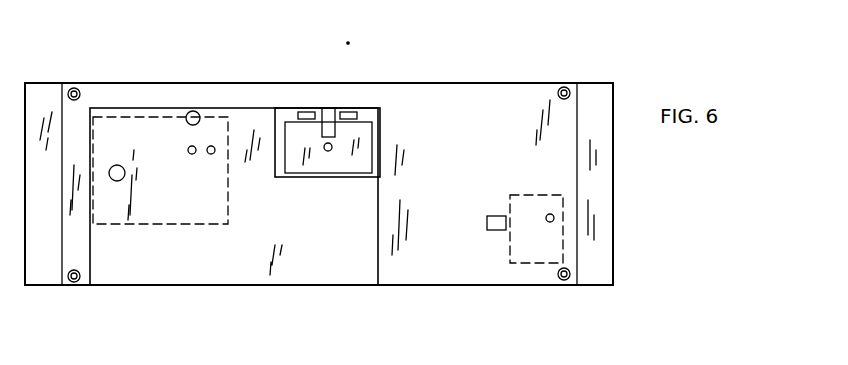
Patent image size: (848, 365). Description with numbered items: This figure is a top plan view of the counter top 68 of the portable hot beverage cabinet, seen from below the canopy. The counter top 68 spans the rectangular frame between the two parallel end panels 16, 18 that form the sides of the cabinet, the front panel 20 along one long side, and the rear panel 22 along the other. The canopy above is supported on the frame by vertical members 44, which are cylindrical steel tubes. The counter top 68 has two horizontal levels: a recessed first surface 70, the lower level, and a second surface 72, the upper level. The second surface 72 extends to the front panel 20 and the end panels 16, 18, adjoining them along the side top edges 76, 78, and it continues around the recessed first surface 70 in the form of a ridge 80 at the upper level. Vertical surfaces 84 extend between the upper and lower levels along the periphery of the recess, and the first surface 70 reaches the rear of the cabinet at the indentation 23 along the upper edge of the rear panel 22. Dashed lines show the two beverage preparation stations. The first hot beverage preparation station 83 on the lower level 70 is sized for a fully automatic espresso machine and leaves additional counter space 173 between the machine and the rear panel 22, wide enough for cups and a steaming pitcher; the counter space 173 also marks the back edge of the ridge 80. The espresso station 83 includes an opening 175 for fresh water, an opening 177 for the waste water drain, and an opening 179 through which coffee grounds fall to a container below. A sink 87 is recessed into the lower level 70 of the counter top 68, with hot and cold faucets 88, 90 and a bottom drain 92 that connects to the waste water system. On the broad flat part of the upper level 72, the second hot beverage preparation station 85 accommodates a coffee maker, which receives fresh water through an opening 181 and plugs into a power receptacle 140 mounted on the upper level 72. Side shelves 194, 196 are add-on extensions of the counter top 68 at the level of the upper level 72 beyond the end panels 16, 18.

The end panel 16 is at (62, 110).
The end panel 18 is at (577, 105).
The front panel 20 is at (348, 83).
The rear panel 22 is at (500, 287).
The indentation 23 is at (280, 287).
The vertical members 44 is at (80, 92).
The counter top 68 is at (443, 79).
The first surface 70 is at (241, 268).
The second surface 72 is at (475, 83).
The side top edge 76 is at (62, 162).
The side top edge 78 is at (577, 160).
The ridge 80 is at (248, 92).
The first hot beverage preparation station 83 is at (230, 210).
The vertical surfaces 84 is at (92, 240).
The second hot beverage preparation station 85 is at (525, 192).
The sink 87 is at (363, 144).
The hot faucet 88 is at (303, 112).
The cold faucet 90 is at (357, 115).
The bottom drain 92 is at (328, 151).
The receptacle 140 is at (487, 223).
The additional counter space 173 is at (193, 111).
The opening 175 is at (213, 154).
The opening 177 is at (190, 154).
The opening 179 is at (117, 165).
The opening 181 is at (550, 214).
The side shelf 194 is at (45, 277).
The side shelf 196 is at (613, 252).